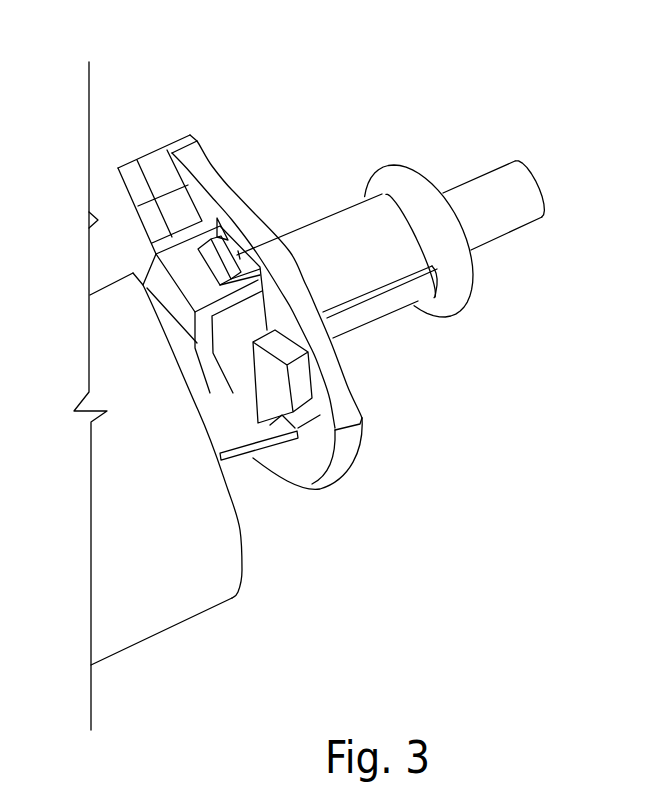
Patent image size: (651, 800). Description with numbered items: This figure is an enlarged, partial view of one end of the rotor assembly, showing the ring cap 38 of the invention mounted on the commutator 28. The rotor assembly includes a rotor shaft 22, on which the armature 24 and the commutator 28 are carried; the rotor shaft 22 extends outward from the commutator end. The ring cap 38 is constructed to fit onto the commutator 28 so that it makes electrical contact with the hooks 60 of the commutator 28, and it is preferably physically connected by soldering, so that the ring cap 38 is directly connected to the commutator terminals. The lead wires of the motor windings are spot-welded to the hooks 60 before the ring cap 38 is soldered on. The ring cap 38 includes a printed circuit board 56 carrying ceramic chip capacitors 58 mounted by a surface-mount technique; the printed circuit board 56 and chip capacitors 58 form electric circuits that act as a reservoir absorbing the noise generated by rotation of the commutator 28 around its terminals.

The rotor shaft 22 is at (470, 185).
The armature 24 is at (163, 633).
The commutator 28 is at (156, 254).
The ring cap 38 is at (270, 116).
The printed circuit board 56 is at (347, 444).
The chip capacitors 58 is at (150, 152).
The hooks 60 is at (287, 237).